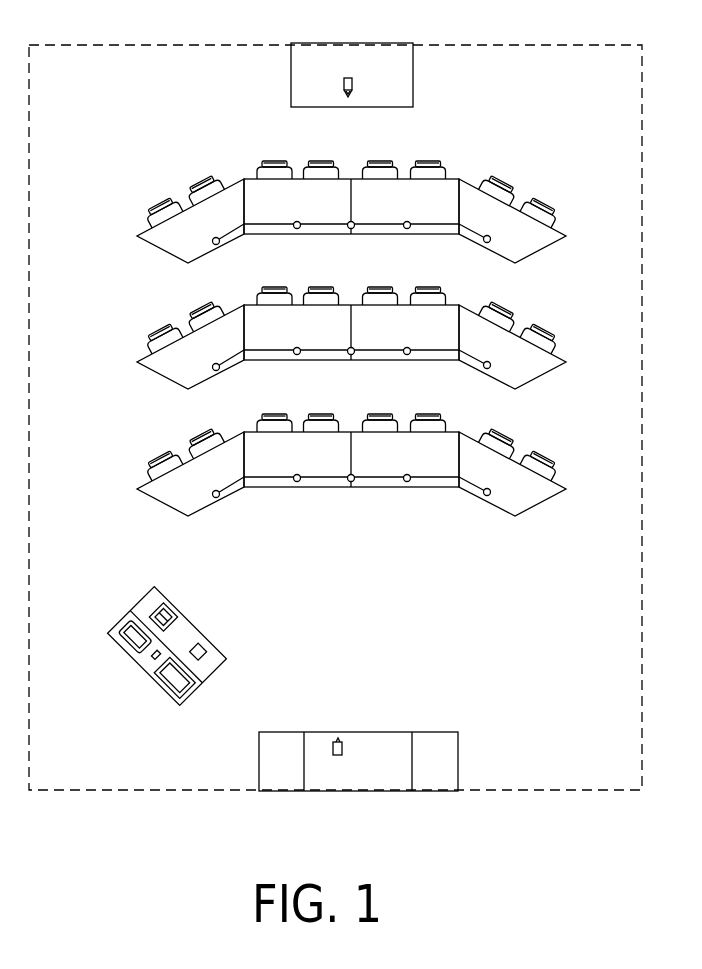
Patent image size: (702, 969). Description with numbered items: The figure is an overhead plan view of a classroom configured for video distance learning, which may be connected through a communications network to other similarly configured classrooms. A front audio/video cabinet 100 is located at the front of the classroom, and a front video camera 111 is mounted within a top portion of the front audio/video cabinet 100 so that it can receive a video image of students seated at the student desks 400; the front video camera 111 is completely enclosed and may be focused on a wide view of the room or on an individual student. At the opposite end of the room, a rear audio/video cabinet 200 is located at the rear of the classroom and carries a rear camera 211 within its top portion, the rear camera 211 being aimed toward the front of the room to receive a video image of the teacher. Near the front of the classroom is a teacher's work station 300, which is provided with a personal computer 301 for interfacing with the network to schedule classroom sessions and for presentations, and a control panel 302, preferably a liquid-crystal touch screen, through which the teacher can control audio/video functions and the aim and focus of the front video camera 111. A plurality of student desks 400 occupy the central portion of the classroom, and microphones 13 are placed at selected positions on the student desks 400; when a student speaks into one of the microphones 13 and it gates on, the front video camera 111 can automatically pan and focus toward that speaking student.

The front audio/video cabinet 100 is at (402, 730).
The front video camera 111 is at (340, 740).
The rear audio/video cabinet 200 is at (398, 57).
The rear camera 211 is at (348, 78).
The teacher's work station 300 is at (128, 648).
The personal computer 301 is at (128, 620).
The control panel 302 is at (183, 685).
The student desks 400 is at (351, 362).
The microphones 13 is at (218, 496).